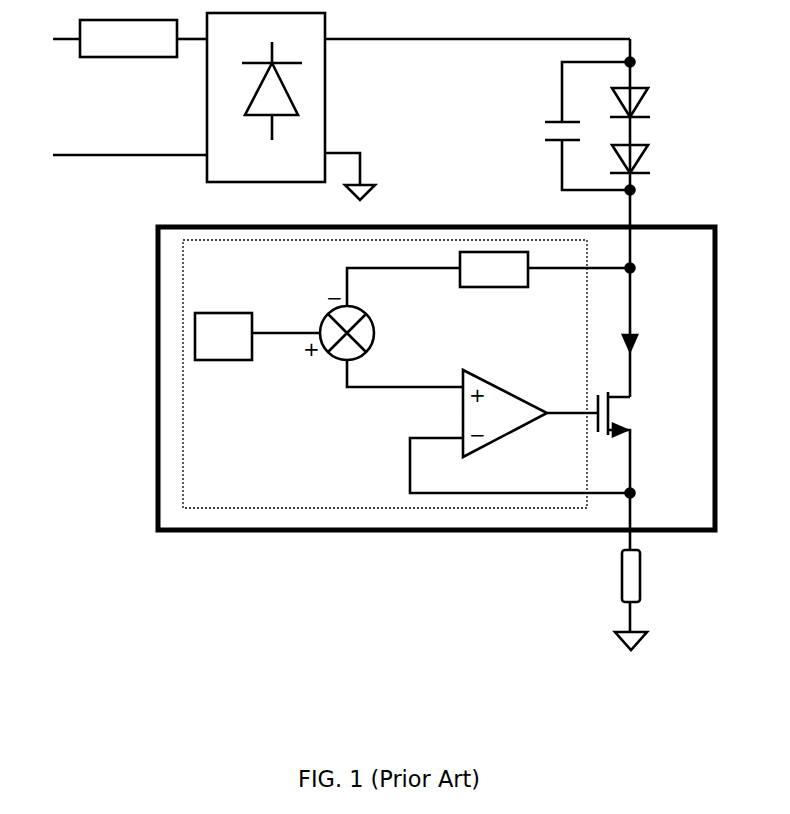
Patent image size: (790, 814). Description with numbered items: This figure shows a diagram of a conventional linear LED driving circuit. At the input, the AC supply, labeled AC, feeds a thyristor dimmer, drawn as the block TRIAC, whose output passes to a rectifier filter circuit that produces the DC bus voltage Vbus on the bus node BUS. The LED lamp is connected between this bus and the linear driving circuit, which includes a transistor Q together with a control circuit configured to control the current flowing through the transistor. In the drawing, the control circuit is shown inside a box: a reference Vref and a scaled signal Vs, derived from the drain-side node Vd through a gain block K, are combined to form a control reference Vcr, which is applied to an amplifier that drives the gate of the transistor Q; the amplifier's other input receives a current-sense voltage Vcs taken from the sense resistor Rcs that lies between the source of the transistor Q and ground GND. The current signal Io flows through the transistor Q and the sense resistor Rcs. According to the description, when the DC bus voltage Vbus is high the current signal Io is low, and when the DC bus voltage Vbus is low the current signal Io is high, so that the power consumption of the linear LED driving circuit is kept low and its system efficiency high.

The AC input AC is at (128, 97).
The thyristor dimmer TRIAC is at (143, 38).
The DC bus voltage Vbus is at (477, 20).
The bus node BUS is at (602, 116).
The reference voltage source Vref is at (257, 333).
The scaled sense voltage Vs is at (403, 287).
The gain block K is at (494, 269).
The drain voltage node Vd is at (600, 268).
The control reference voltage Vcr is at (381, 378).
The current sense voltage Vcs is at (498, 468).
The current signal Io is at (642, 312).
The transistor Q is at (628, 442).
The current sense resistor Rcs is at (604, 562).
The ground GND is at (627, 657).